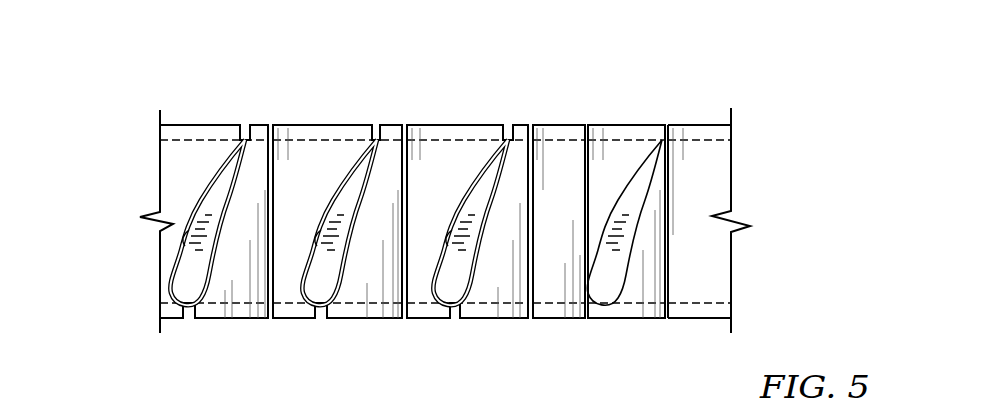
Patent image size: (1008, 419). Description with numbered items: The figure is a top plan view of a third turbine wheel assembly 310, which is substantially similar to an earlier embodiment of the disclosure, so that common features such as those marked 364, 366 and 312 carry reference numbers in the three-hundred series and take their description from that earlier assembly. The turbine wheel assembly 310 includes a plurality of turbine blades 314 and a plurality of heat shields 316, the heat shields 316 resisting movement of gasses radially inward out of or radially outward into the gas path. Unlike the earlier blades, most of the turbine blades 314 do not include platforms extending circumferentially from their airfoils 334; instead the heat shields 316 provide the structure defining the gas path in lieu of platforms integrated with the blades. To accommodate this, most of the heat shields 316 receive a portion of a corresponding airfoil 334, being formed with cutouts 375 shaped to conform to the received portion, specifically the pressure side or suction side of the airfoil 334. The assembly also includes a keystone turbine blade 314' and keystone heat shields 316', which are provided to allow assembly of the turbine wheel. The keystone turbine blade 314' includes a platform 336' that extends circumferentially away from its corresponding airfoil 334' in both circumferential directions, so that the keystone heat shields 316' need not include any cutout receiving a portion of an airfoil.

The turbine wheel assembly 310 is at (744, 64).
The turbine wheel assembly feature 312 is at (169, 190).
The turbine blade 314 is at (365, 171).
The keystone turbine blade 314' is at (645, 171).
The heat shield 316 is at (445, 267).
The keystone heat shield 316' is at (550, 260).
The airfoil 334 is at (339, 181).
The airfoil of keystone turbine blade 334' is at (624, 180).
The platform 336' is at (626, 292).
The turbine wheel assembly feature 364 is at (205, 192).
The turbine wheel assembly feature 366 is at (227, 198).
The cutout 375 is at (188, 238).